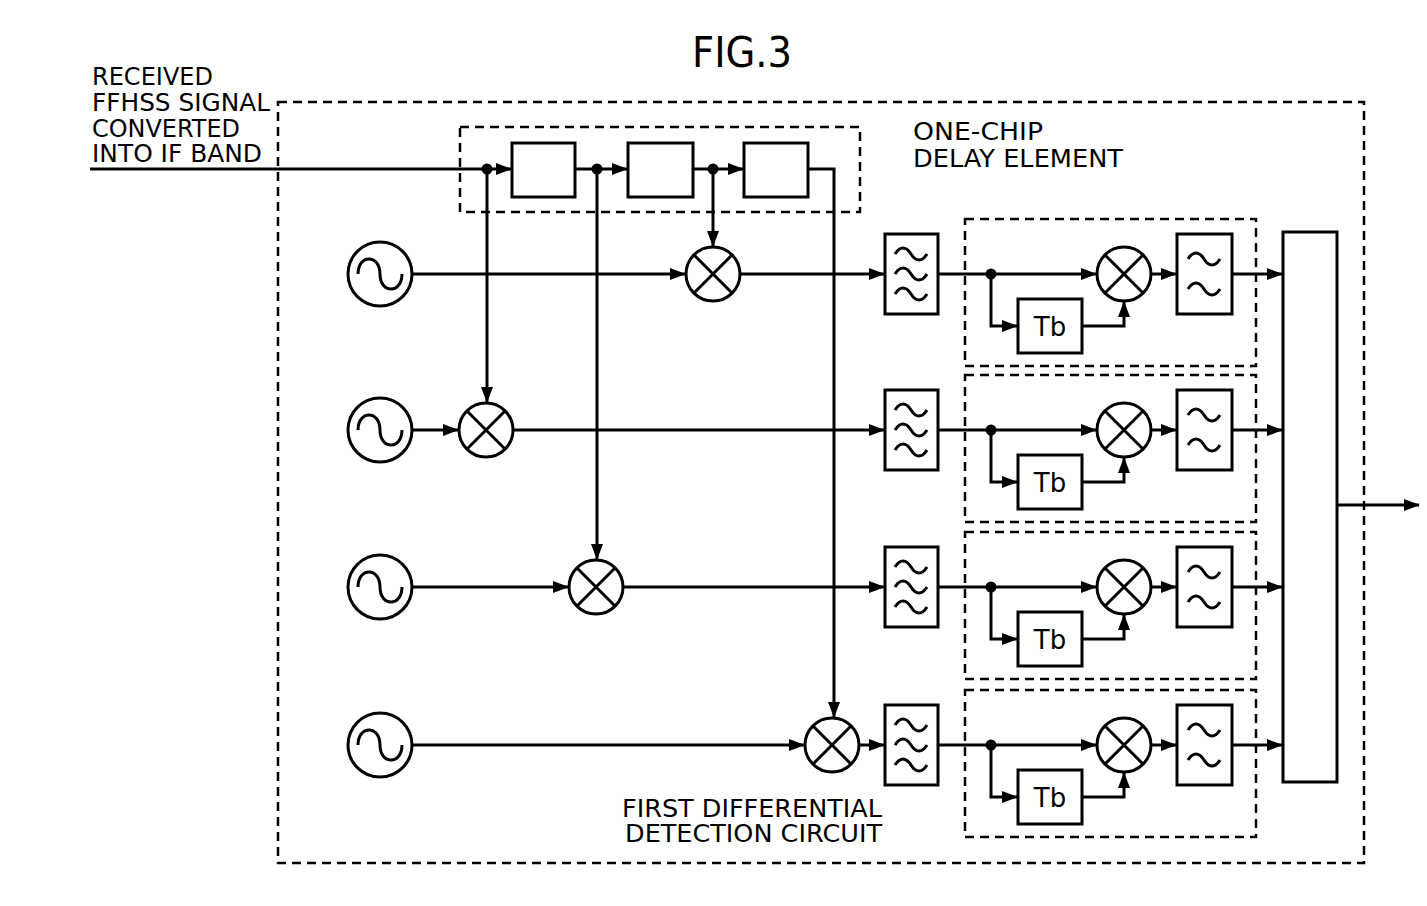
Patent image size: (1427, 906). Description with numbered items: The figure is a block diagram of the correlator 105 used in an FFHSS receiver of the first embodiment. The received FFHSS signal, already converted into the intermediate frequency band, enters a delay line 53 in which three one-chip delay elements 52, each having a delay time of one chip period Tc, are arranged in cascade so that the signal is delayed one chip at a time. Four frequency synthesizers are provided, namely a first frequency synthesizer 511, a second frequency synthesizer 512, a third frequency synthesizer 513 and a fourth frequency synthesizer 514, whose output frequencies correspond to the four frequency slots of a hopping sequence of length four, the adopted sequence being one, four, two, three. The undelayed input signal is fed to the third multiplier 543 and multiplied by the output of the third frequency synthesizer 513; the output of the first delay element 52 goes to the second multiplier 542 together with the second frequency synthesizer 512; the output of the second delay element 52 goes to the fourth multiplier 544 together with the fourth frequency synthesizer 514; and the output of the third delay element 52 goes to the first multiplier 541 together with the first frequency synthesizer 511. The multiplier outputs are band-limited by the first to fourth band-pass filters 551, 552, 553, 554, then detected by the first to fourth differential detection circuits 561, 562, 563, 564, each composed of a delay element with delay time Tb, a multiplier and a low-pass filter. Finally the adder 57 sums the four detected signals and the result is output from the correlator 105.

The correlator 105 is at (277, 815).
The delay line 53 is at (460, 148).
The one-chip delay element 52 is at (695, 424).
The adder 57 is at (1311, 232).
The first frequency synthesizer 511 is at (549, 789).
The second frequency synthesizer 512 is at (432, 628).
The third frequency synthesizer 513 is at (408, 471).
The fourth frequency synthesizer 514 is at (490, 321).
The first multiplier 541 is at (818, 727).
The second multiplier 542 is at (596, 614).
The third multiplier 543 is at (506, 445).
The fourth multiplier 544 is at (713, 301).
The first band-pass filter 551 is at (908, 705).
The second band-pass filter 552 is at (908, 547).
The third band-pass filter 553 is at (908, 390).
The fourth band-pass filter 554 is at (913, 233).
The first differential detection circuit 561 is at (965, 819).
The second differential detection circuit 562 is at (965, 654).
The third differential detection circuit 563 is at (965, 496).
The fourth differential detection circuit 564 is at (965, 340).